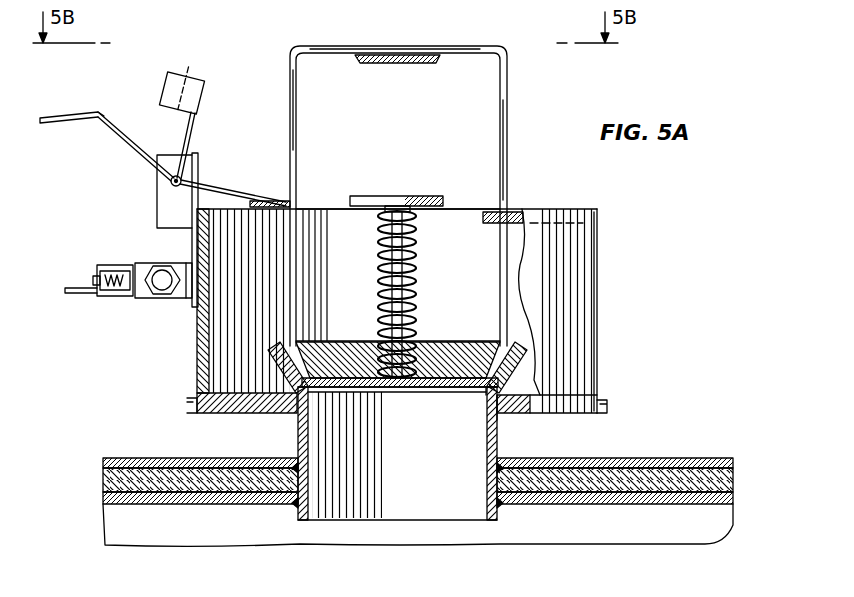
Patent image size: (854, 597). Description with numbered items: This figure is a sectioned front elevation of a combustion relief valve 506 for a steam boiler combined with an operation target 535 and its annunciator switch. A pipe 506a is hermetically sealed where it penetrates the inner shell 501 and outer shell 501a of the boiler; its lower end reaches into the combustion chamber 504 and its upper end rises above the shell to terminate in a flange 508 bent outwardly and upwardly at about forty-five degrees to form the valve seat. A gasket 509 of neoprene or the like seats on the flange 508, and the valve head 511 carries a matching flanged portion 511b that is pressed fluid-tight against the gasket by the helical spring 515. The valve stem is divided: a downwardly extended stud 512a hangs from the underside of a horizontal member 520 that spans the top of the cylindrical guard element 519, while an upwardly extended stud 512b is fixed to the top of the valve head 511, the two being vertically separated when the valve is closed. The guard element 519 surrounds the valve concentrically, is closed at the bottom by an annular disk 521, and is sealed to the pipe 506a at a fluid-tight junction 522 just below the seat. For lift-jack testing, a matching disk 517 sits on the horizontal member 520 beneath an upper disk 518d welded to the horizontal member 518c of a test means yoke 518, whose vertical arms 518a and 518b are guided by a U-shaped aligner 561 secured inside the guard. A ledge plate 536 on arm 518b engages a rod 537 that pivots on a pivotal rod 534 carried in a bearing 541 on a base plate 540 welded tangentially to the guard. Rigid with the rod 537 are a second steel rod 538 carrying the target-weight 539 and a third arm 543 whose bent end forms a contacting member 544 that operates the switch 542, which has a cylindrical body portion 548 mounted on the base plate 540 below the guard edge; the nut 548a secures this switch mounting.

The inner shell 501 is at (418, 486).
The outer shell 501a is at (655, 500).
The combustion chamber 504 is at (443, 530).
The combustion relief valve 506 is at (580, 77).
The pipe 506a is at (298, 438).
The flange 508 is at (514, 378).
The gasket 509 is at (486, 392).
The valve head 511 is at (398, 339).
The flanged portion 511b is at (303, 367).
The downwardly extended portion of divided valve stem 512a is at (418, 247).
The upwardly extended portion of divided valve stem 512b is at (418, 353).
The helical spring 515 is at (418, 268).
The matching disk 517 is at (383, 197).
The test means yoke 518 is at (550, 29).
The vertical arm of yoke 518a is at (504, 108).
The vertical arm of yoke 518b is at (293, 78).
The horizontal member of yoke 518c is at (320, 45).
The upper disk 518d is at (412, 64).
The guard element 519 is at (598, 288).
The horizontal member 520 is at (383, 213).
The annular disk 521 is at (242, 403).
The fluid-tight junction 522 is at (497, 405).
The pivotal rod 534 is at (170, 191).
The operation target 535 is at (149, 114).
The ledge plate 536 is at (283, 200).
The rod 537 is at (212, 182).
The second steel rod 538 is at (193, 124).
The target-weight 539 is at (180, 80).
The base plate 540 is at (198, 160).
The bearing 541 is at (165, 211).
The switch 542 is at (129, 288).
The third arm 543 is at (132, 141).
The contacting member 544 is at (58, 118).
The cylindrical body portion 548 is at (168, 265).
The nut 548a is at (155, 288).
The U-shaped aligner 561 is at (515, 217).